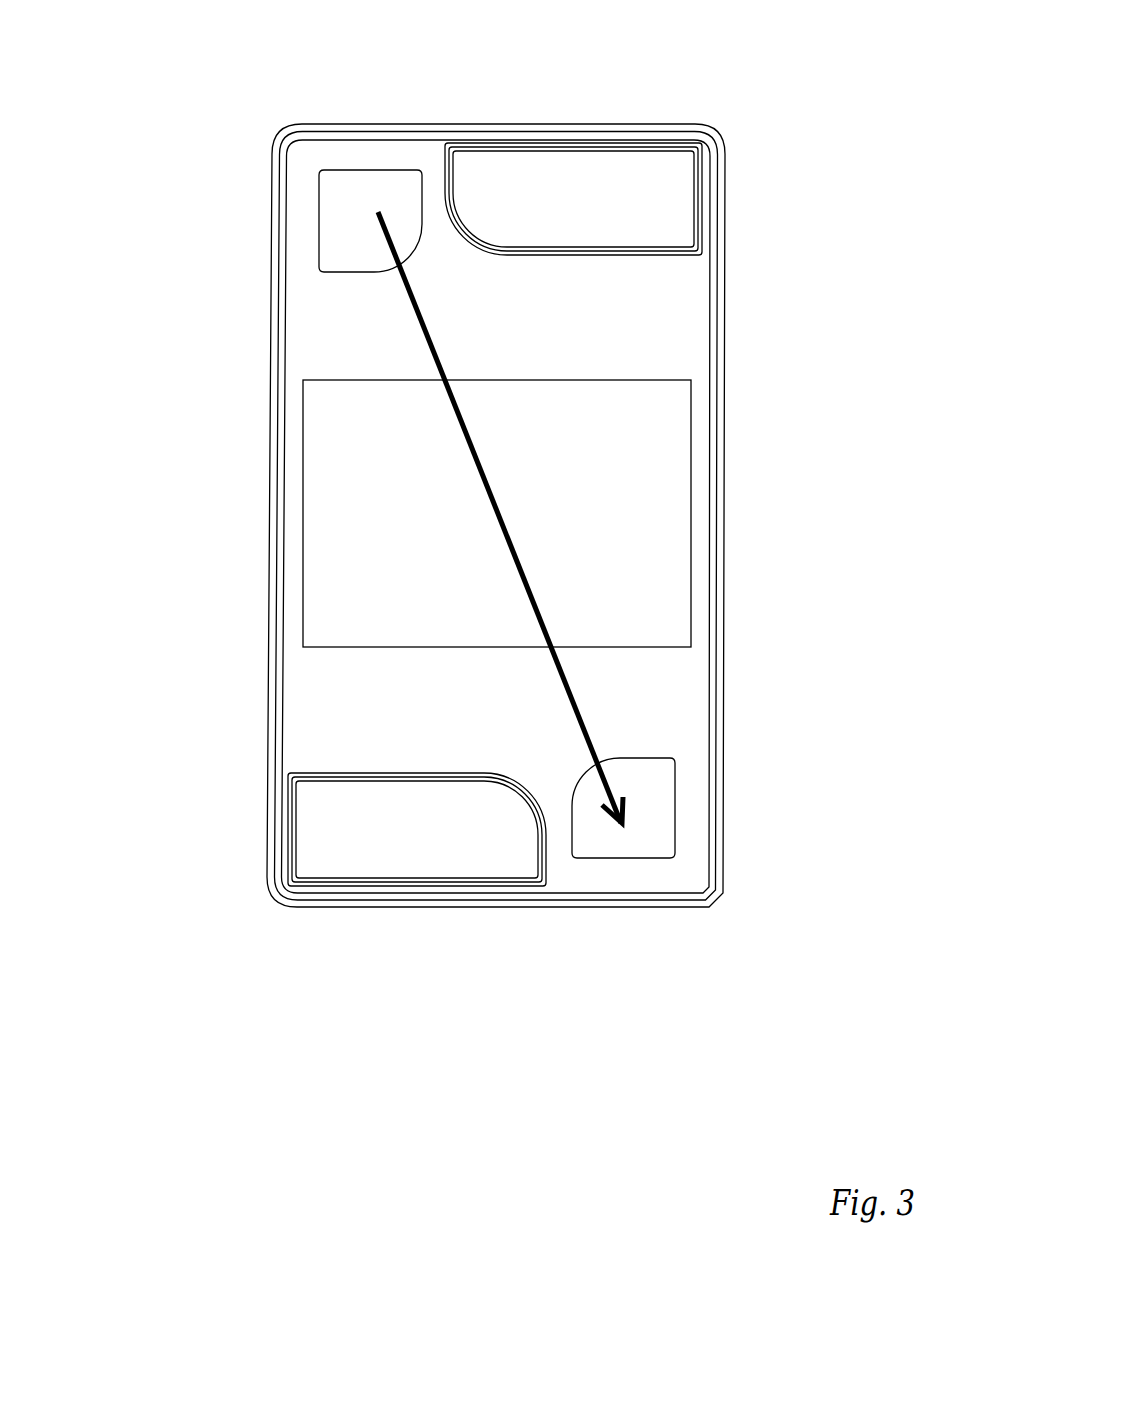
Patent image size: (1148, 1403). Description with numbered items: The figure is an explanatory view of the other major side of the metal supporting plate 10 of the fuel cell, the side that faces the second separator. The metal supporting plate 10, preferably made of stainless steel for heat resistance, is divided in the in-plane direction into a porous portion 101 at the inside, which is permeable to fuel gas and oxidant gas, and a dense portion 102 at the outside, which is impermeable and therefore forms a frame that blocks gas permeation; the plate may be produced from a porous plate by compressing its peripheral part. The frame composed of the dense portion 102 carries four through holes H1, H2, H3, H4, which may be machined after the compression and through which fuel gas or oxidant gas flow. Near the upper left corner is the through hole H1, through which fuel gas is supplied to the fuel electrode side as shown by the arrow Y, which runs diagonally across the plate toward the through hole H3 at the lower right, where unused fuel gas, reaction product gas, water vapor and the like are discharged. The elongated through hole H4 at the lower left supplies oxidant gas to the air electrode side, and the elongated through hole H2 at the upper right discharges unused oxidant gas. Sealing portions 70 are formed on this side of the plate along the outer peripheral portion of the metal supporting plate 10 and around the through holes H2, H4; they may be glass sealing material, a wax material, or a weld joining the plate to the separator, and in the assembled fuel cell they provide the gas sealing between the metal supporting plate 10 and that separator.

The metal supporting plate 10 is at (138, 305).
The porous portion 101 is at (323, 427).
The dense portion 102 is at (323, 323).
The sealing portions 70 is at (720, 178).
The arrow Y is at (483, 487).
The through hole H1 is at (363, 187).
The through hole H2 is at (550, 178).
The through hole H3 is at (628, 843).
The through hole H4 is at (393, 862).